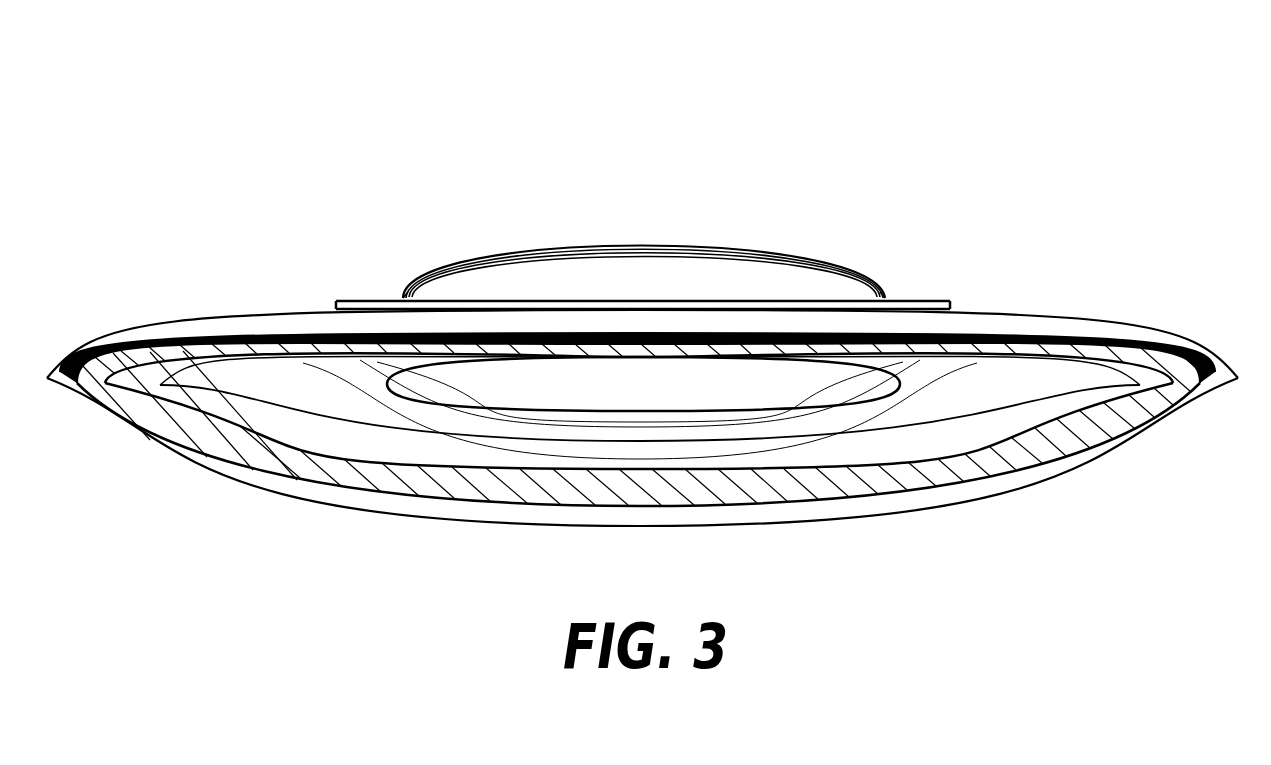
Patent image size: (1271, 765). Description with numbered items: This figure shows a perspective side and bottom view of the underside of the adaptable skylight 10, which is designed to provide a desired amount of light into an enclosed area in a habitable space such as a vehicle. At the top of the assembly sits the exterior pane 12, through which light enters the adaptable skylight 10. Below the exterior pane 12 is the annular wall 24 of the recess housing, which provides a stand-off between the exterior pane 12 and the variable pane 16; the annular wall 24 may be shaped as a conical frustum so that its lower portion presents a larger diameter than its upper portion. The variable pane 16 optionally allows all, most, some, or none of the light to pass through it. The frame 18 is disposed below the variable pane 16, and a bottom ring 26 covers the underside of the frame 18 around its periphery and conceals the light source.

The adaptable skylight 10 is at (212, 124).
The exterior pane 12 is at (632, 247).
The variable pane 16 is at (930, 298).
The frame 18 is at (1082, 320).
The annular wall 24 is at (577, 285).
The bottom ring 26 is at (1068, 440).